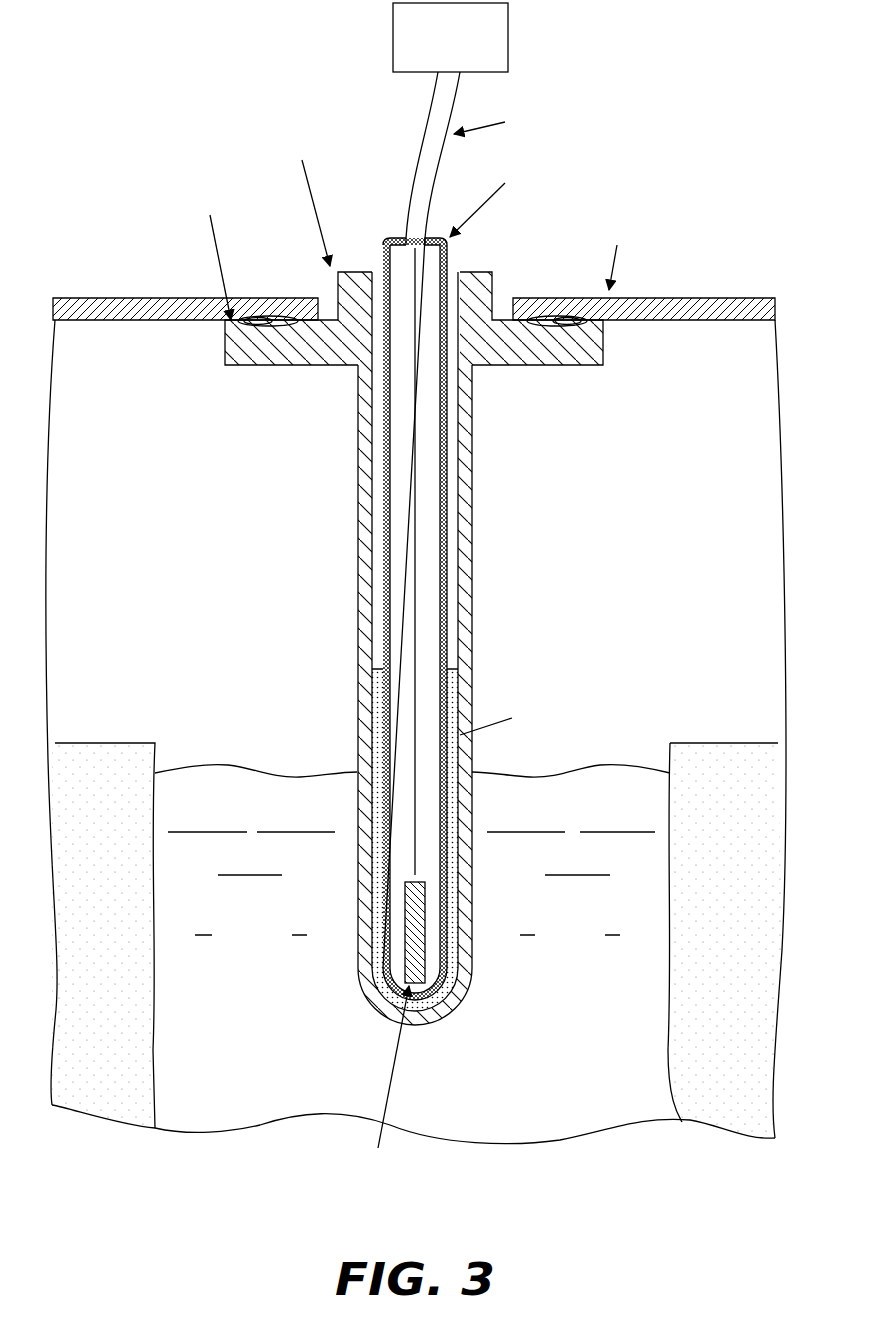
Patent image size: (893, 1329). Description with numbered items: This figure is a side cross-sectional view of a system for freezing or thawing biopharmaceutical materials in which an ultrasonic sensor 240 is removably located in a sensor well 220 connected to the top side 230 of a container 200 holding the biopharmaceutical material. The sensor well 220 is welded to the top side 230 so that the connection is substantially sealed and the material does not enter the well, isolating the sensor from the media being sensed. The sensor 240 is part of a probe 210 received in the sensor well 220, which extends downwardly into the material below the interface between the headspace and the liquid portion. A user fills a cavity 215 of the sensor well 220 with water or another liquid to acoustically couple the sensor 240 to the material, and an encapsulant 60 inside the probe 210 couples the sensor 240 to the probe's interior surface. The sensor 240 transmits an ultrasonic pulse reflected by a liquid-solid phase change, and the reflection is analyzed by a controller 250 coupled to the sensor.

The container 200 is at (739, 297).
The top side 230 is at (681, 297).
The sensor well 220 is at (489, 289).
The probe 210 is at (385, 254).
The cavity 215 is at (458, 695).
The encapsulant 60 is at (428, 525).
The ultrasonic sensor 240 is at (422, 931).
The controller 250 is at (428, 51).